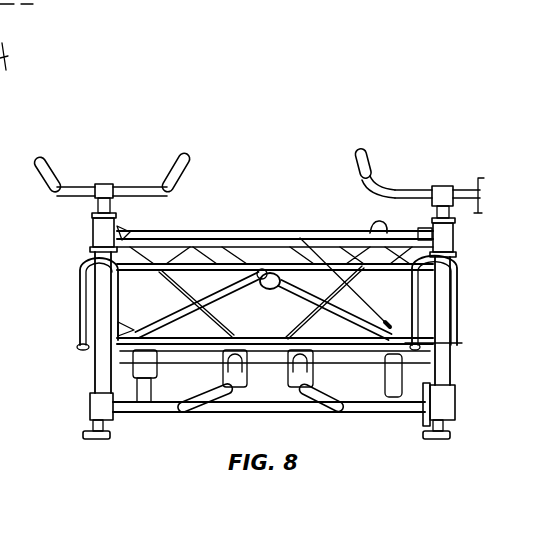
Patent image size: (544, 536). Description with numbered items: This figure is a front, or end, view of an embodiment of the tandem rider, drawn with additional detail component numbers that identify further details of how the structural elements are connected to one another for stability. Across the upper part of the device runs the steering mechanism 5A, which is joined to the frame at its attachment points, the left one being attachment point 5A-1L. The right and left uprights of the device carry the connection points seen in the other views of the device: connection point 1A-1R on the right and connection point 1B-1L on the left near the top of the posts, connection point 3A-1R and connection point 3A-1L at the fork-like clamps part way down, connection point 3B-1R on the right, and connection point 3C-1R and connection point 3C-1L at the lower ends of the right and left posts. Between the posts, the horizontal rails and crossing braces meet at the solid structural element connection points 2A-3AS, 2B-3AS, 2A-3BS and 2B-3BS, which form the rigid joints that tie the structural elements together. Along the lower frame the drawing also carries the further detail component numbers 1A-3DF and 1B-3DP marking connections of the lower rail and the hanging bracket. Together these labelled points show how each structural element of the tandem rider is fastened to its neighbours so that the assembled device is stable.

The connection point 1A-1R is at (426, 238).
The connection point 3B-1R is at (369, 220).
The structural element connection point 2B-3AS is at (317, 262).
The structural element connection point 2A-3BS is at (424, 233).
The structural element connection point 2B-3BS is at (178, 216).
The connection point 1B-1L is at (126, 230).
The attachment point 5A-1L is at (122, 232).
The steering mechanism 5A is at (288, 230).
The connection point 3C-1L is at (118, 357).
The structural element connection point 2A-3AS is at (132, 327).
The connection point 3A-1L is at (115, 345).
The lower rail frame 1A-3DF is at (294, 336).
The connection point 3A-1R is at (405, 346).
The connection point 3C-1R is at (413, 352).
The drop hanger bracket 1B-3DP is at (223, 345).